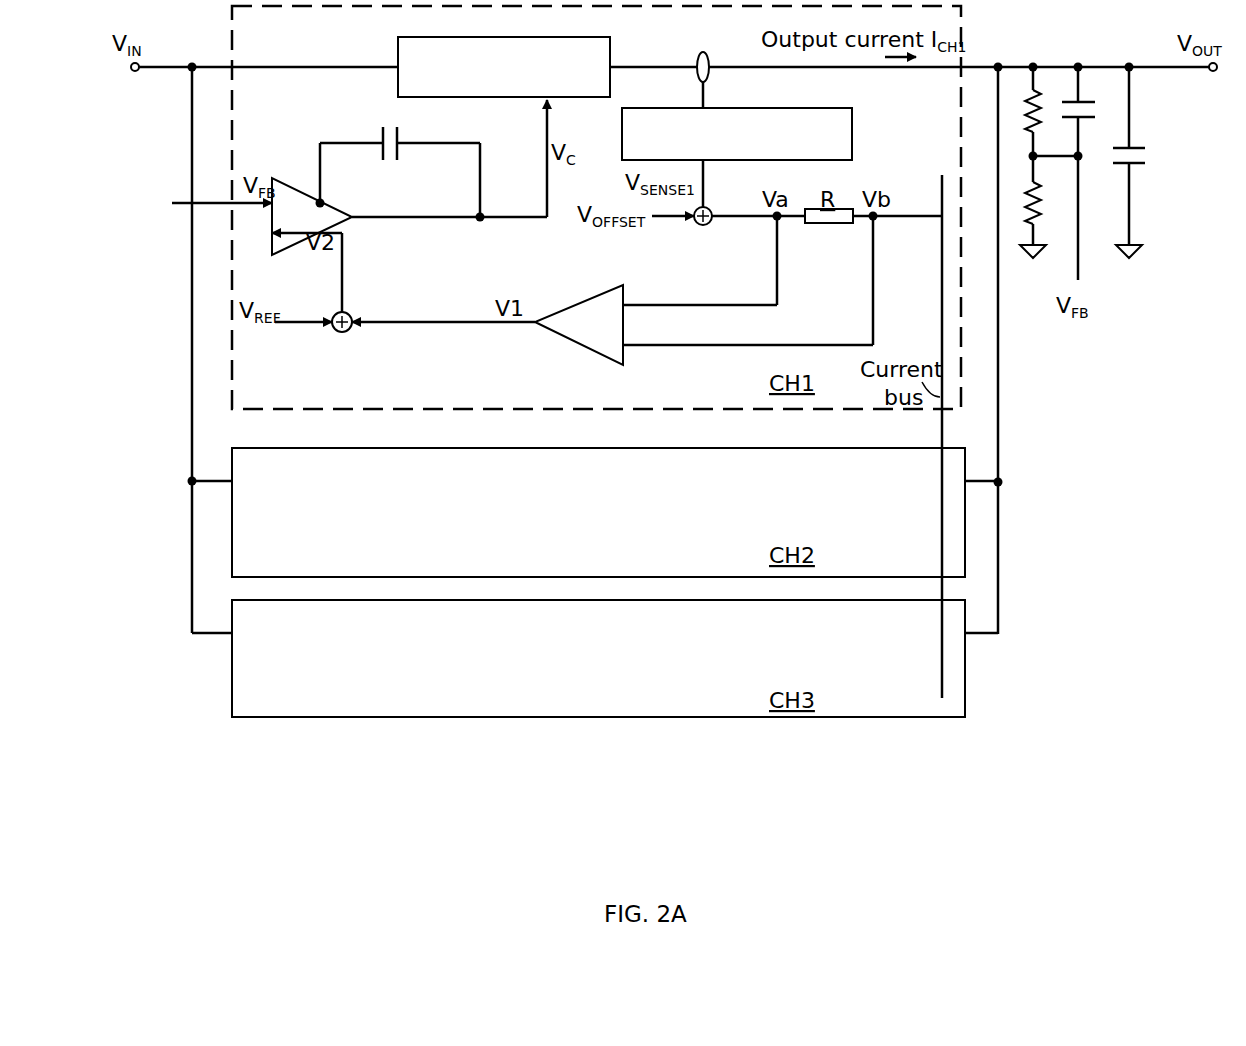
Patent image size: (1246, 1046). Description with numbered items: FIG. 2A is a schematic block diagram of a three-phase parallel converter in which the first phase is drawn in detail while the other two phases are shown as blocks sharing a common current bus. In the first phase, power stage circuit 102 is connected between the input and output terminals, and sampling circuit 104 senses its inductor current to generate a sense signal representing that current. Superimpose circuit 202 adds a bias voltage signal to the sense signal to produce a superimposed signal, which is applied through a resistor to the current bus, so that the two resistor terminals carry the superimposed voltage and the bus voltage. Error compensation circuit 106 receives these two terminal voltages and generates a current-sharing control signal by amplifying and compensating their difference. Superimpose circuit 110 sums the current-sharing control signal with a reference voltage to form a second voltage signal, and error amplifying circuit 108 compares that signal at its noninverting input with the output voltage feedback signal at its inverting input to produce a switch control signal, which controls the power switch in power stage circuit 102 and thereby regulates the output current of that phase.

The power stage circuit 102 is at (504, 67).
The sampling circuit 104 is at (737, 134).
The error compensation circuit 106 is at (579, 325).
The error amplifying circuit 108 is at (312, 216).
The superimpose circuit 110 is at (351, 331).
The superimpose circuit 202 is at (709, 226).